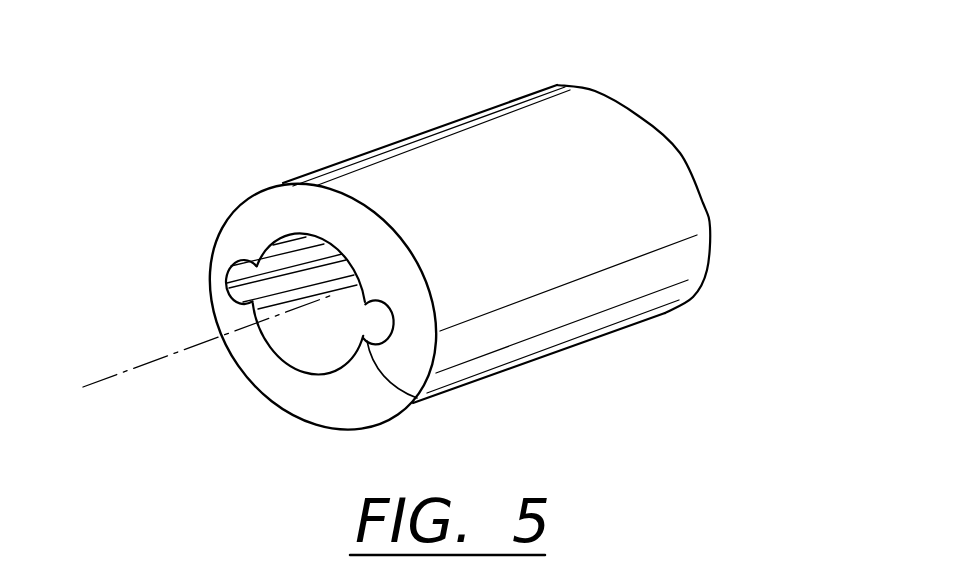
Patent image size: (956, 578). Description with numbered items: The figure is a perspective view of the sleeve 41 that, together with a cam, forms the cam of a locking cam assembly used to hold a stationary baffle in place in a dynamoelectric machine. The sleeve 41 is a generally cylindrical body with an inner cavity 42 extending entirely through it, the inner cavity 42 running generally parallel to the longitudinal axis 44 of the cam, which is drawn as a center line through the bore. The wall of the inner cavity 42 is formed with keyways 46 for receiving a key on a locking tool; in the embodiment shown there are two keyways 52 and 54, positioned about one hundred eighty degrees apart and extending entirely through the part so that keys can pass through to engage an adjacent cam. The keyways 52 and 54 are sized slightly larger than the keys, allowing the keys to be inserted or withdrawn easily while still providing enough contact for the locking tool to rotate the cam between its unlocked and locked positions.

The sleeve 41 is at (677, 132).
The inner cavity 42 is at (296, 333).
The longitudinal axis 44 is at (140, 366).
The keyways 46 is at (238, 259).
The keyway 52 is at (225, 283).
The keyway 54 is at (417, 398).